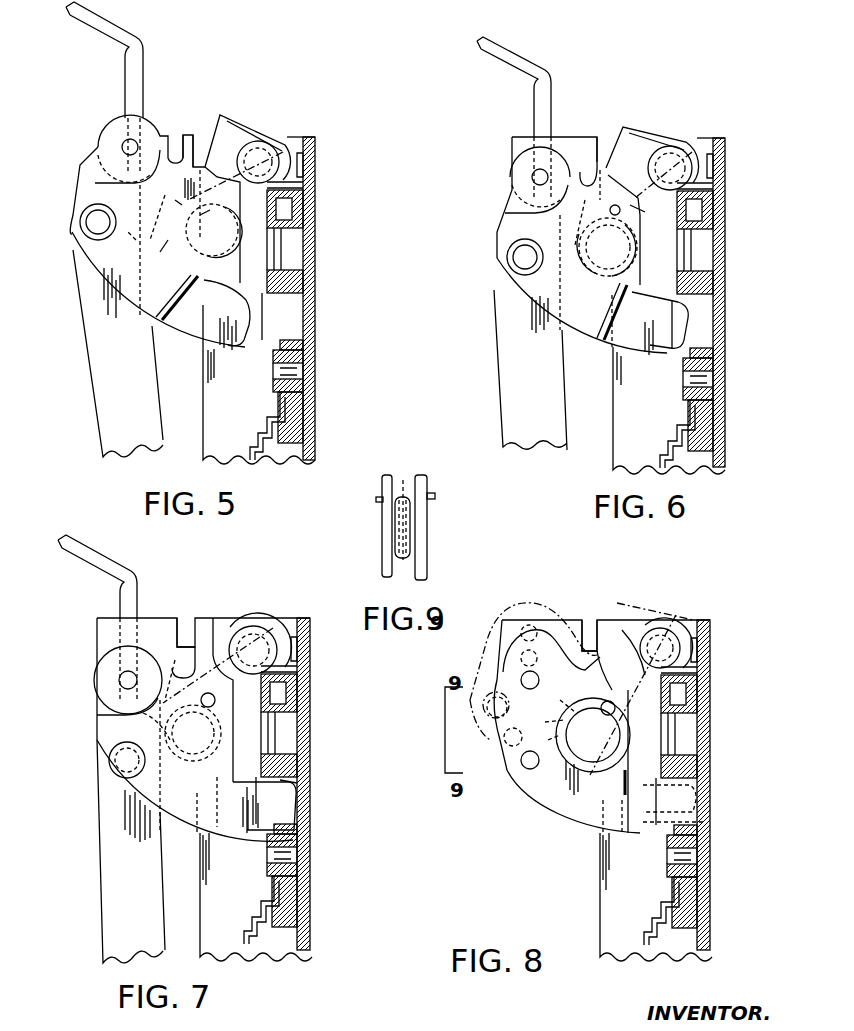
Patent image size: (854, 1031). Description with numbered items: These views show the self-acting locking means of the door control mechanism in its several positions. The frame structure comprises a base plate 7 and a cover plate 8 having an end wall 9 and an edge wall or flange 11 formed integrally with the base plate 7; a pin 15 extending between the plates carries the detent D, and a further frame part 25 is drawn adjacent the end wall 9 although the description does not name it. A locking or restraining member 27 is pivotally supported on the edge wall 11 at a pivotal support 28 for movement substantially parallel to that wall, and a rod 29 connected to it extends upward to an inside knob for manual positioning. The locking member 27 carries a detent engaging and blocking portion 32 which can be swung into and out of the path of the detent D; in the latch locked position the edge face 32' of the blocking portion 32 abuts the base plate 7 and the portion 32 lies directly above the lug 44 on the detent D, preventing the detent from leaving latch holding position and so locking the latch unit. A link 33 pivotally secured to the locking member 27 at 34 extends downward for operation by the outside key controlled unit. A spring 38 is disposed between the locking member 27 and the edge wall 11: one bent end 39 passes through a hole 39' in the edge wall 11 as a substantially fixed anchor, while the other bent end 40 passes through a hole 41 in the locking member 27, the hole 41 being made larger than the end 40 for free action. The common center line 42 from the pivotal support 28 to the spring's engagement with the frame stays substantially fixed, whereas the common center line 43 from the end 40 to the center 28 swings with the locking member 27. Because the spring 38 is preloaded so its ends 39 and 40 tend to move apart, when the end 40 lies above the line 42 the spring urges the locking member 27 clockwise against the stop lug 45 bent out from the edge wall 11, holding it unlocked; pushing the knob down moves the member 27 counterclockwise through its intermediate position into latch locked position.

In FIG. 5, the base plate 7 is at (315, 447).
In FIG. 6, the base plate 7 is at (717, 450).
In FIG. 7, the base plate 7 is at (308, 933).
In FIG. 8, the base plate 7 is at (708, 931).
In FIG. 5, the cover plate 8 is at (250, 455).
In FIG. 6, the cover plate 8 is at (663, 458).
In FIG. 7, the cover plate 8 is at (245, 931).
In FIG. 8, the cover plate 8 is at (647, 933).
In FIG. 5, the end wall 9 is at (305, 182).
In FIG. 6, the end wall 9 is at (727, 185).
In FIG. 7, the end wall 9 is at (307, 662).
In FIG. 8, the end wall 9 is at (712, 672).
In FIG. 5, the edge wall or flange 11 is at (220, 403).
In FIG. 6, the edge wall or flange 11 is at (630, 418).
In FIG. 9, the edge wall or flange 11 is at (382, 546).
In FIG. 7, the edge wall or flange 11 is at (218, 900).
In FIG. 8, the edge wall or flange 11 is at (610, 905).
In FIG. 5, the pin 15 is at (283, 375).
In FIG. 6, the pin 15 is at (700, 381).
In FIG. 7, the pin 15 is at (293, 858).
In FIG. 8, the pin 15 is at (697, 860).
In FIG. 5, the channel member 25 is at (304, 221).
In FIG. 6, the channel member 25 is at (717, 220).
In FIG. 7, the channel member 25 is at (303, 702).
In FIG. 8, the channel member 25 is at (708, 704).
In FIG. 5, the locking or restraining member 27 is at (92, 181).
In FIG. 6, the locking or restraining member 27 is at (515, 218).
In FIG. 9, the locking or restraining member 27 is at (427, 540).
In FIG. 7, the locking or restraining member 27 is at (103, 730).
In FIG. 8, the locking or restraining member 27 is at (597, 820).
In FIG. 5, the pivotal support 28 is at (262, 158).
In FIG. 6, the pivotal support 28 is at (668, 162).
In FIG. 7, the pivotal support 28 is at (248, 652).
In FIG. 8, the pivotal support 28 is at (659, 643).
In FIG. 5, the rod 29 is at (133, 78).
In FIG. 6, the rod 29 is at (546, 95).
In FIG. 7, the rod 29 is at (130, 592).
In FIG. 5, the detent engaging and blocking portion 32 is at (203, 310).
In FIG. 6, the detent engaging and blocking portion 32 is at (642, 309).
In FIG. 7, the detent engaging and blocking portion 32 is at (290, 807).
In FIG. 8, the detent engaging and blocking portion 32 is at (697, 795).
In FIG. 5, the edge face of blocking portion 32' is at (234, 366).
In FIG. 6, the edge face of blocking portion 32' is at (704, 334).
In FIG. 7, the edge face of blocking portion 32' is at (315, 776).
In FIG. 8, the edge face of blocking portion 32' is at (703, 818).
In FIG. 5, the link 33 is at (103, 349).
In FIG. 6, the link 33 is at (510, 363).
In FIG. 7, the link 33 is at (113, 876).
In FIG. 5, the pivot of link 34 is at (85, 224).
In FIG. 5, the spring 38 is at (240, 248).
In FIG. 6, the spring 38 is at (603, 270).
In FIG. 9, the spring 38 is at (401, 497).
In FIG. 7, the spring 38 is at (228, 757).
In FIG. 8, the spring 38 is at (578, 745).
In FIG. 5, the spring end 39 is at (124, 245).
In FIG. 9, the spring end 39 is at (358, 509).
In FIG. 8, the spring end 39 is at (542, 720).
In FIG. 8, the hole in edge wall 39' is at (544, 740).
In FIG. 5, the spring end 40 is at (187, 197).
In FIG. 9, the spring end 40 is at (436, 497).
In FIG. 5, the hole in locking member 41 is at (207, 222).
In FIG. 5, the common center line 42 is at (161, 236).
In FIG. 6, the common center line 42 is at (610, 211).
In FIG. 7, the common center line 42 is at (200, 680).
In FIG. 8, the common center line 42 is at (560, 710).
In FIG. 5, the common center line 43 is at (165, 201).
In FIG. 6, the common center line 43 is at (640, 206).
In FIG. 7, the common center line 43 is at (206, 710).
In FIG. 8, the common center line 43 is at (616, 708).
In FIG. 5, the lug on detent 44 is at (303, 340).
In FIG. 6, the lug on detent 44 is at (717, 351).
In FIG. 5, the stop lug 45 is at (190, 147).
In FIG. 6, the stop lug 45 is at (603, 177).
In FIG. 7, the stop lug 45 is at (186, 636).
In FIG. 8, the stop lug 45 is at (592, 630).
In FIG. 5, the detent D is at (300, 412).
In FIG. 6, the detent D is at (717, 414).
In FIG. 7, the detent D is at (305, 897).
In FIG. 8, the detent D is at (707, 893).